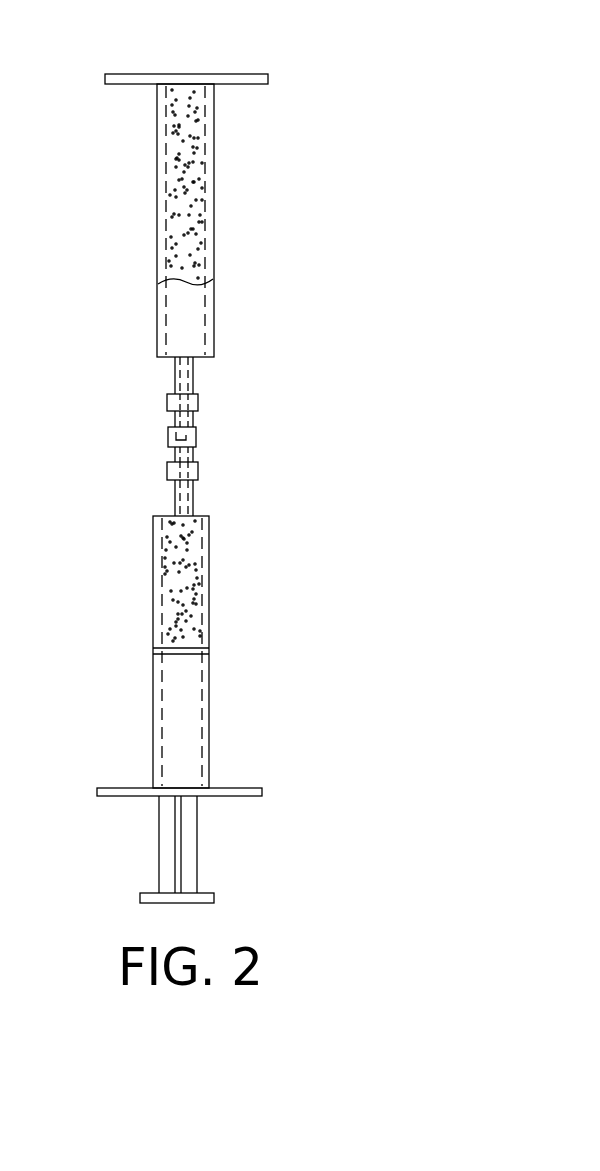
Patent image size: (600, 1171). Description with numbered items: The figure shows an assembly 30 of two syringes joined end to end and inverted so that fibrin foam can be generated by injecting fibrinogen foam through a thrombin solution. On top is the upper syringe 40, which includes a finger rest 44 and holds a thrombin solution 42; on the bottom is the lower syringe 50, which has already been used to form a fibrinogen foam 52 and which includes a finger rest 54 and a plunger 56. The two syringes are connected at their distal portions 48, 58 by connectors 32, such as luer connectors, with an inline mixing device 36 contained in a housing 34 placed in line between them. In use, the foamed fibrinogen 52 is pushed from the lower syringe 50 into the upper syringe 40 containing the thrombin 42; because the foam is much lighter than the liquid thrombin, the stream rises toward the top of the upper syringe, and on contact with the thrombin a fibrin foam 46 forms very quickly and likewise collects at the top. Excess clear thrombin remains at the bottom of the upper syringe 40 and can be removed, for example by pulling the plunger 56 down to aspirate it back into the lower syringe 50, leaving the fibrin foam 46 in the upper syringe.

The assembly 30 is at (349, 306).
The connectors 32 is at (200, 404).
The housing 34 is at (211, 441).
The inline mixing device 36 is at (176, 440).
The upper syringe 40 is at (214, 207).
The thrombin solution 42 is at (196, 303).
The finger rest 44 is at (121, 74).
The fibrin foam 46 is at (204, 123).
The distal portion 48 is at (173, 386).
The lower syringe 50 is at (196, 705).
The fibrinogen foam 52 is at (162, 606).
The finger rest 54 is at (112, 800).
The plunger 56 is at (140, 897).
The distal portion 58 is at (172, 494).